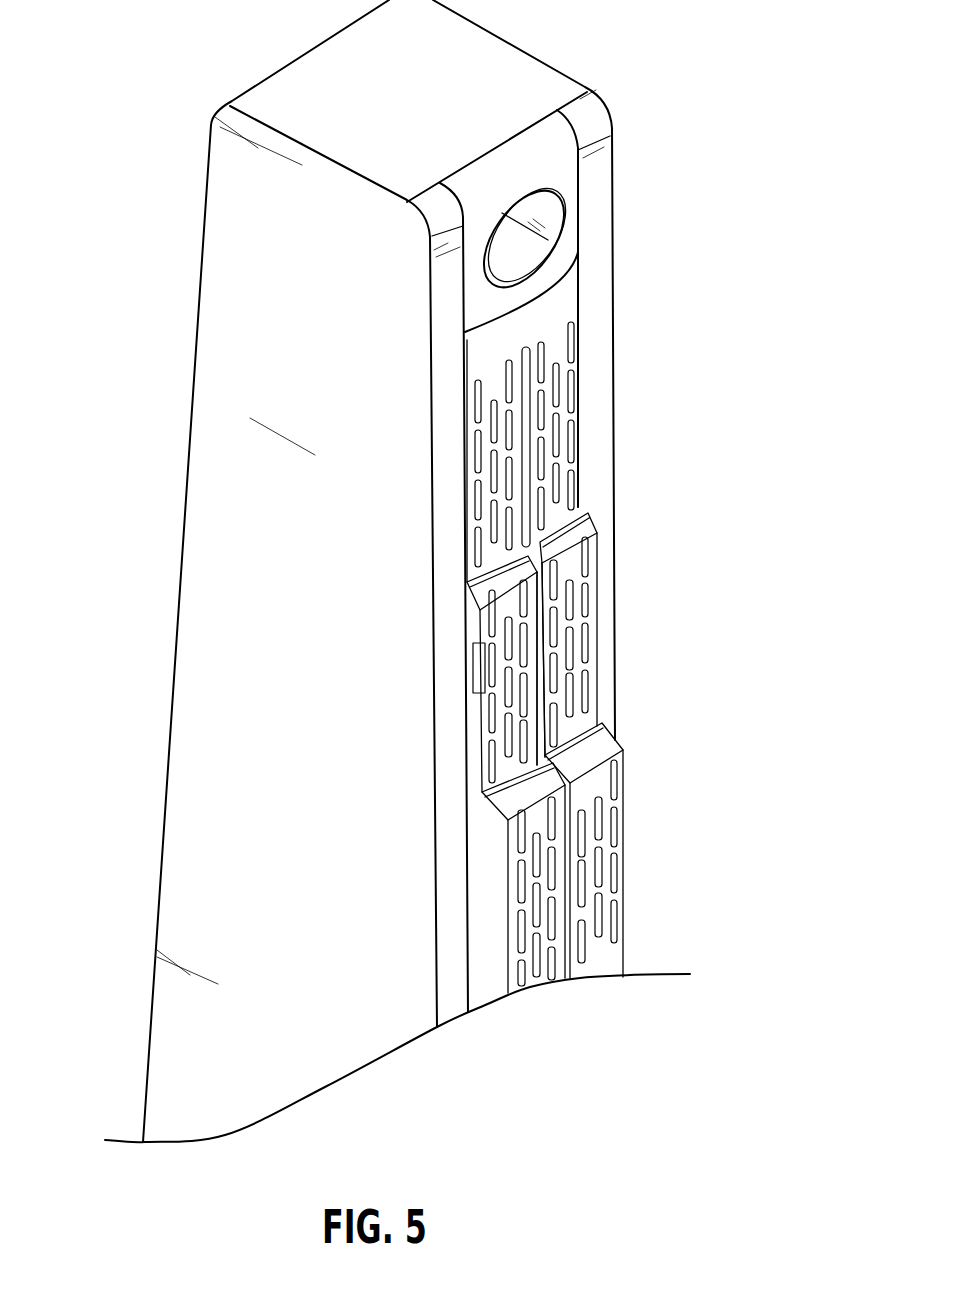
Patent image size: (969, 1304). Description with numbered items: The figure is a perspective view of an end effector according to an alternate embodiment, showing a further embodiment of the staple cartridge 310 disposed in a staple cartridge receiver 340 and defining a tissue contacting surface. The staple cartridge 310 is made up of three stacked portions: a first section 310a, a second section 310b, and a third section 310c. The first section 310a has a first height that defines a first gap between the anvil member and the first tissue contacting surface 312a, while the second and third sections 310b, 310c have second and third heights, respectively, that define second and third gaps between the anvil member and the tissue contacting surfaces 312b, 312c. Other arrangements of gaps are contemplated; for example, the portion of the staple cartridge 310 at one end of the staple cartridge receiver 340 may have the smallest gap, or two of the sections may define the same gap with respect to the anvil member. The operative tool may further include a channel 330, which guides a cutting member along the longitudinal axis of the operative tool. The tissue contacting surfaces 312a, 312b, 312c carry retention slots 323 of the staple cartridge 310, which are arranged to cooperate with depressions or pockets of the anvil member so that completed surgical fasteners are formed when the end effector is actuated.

The staple cartridge receiver 340 is at (150, 629).
The staple cartridge 310 is at (604, 656).
The first section 310a is at (611, 888).
The second section 310b is at (602, 622).
The third section 310c is at (601, 420).
The first tissue contacting surface 312a is at (612, 962).
The tissue contacting surface 312b is at (592, 682).
The tissue contacting surface 312c is at (562, 307).
The retention slots 323 is at (590, 553).
The channel 330 is at (541, 547).